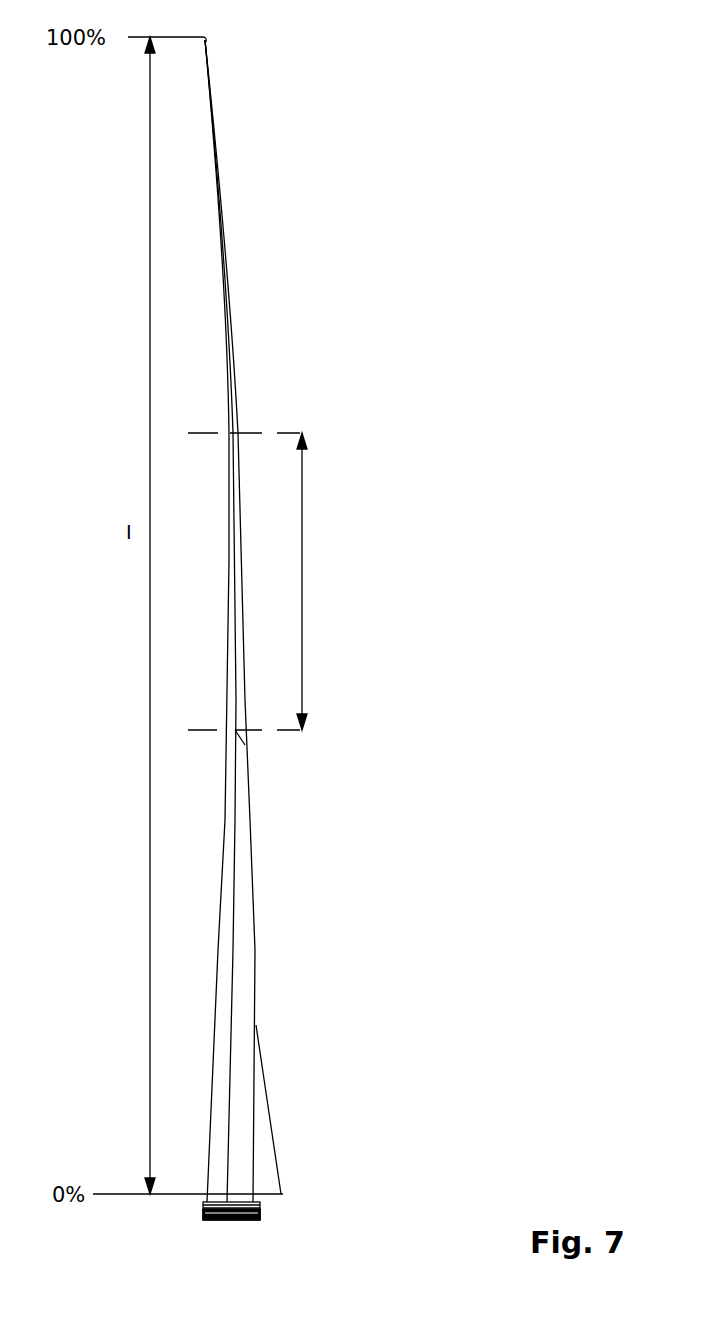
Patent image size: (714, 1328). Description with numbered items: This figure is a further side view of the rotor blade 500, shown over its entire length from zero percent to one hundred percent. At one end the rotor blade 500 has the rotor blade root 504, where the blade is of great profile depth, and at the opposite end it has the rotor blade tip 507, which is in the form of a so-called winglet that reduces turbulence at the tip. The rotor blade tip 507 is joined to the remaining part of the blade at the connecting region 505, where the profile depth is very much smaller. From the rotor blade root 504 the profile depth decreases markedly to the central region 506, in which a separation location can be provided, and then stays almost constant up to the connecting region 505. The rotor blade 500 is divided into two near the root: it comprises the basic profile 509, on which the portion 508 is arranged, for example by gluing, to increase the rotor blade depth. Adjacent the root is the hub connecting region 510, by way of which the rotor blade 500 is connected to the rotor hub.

The rotor blade 500 is at (357, 180).
The rotor blade root 504 is at (204, 1216).
The connecting region 505 is at (210, 48).
The central region 506 is at (302, 594).
The rotor blade tip 507 is at (203, 37).
The portion for increasing the rotor blade depth 508 is at (263, 1130).
The basic profile 509 is at (240, 985).
The hub connecting region 510 is at (262, 1215).